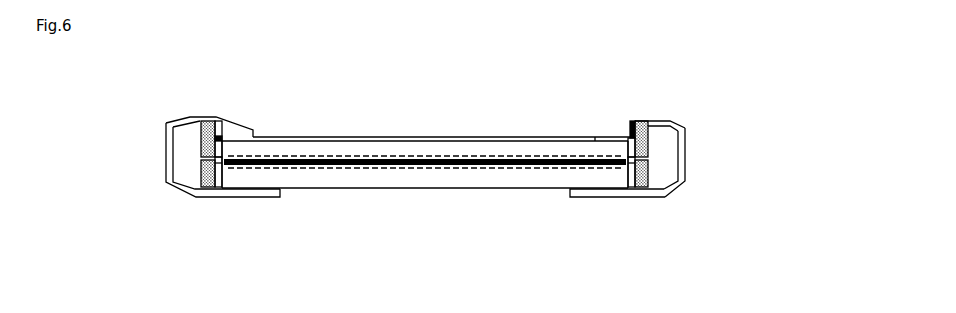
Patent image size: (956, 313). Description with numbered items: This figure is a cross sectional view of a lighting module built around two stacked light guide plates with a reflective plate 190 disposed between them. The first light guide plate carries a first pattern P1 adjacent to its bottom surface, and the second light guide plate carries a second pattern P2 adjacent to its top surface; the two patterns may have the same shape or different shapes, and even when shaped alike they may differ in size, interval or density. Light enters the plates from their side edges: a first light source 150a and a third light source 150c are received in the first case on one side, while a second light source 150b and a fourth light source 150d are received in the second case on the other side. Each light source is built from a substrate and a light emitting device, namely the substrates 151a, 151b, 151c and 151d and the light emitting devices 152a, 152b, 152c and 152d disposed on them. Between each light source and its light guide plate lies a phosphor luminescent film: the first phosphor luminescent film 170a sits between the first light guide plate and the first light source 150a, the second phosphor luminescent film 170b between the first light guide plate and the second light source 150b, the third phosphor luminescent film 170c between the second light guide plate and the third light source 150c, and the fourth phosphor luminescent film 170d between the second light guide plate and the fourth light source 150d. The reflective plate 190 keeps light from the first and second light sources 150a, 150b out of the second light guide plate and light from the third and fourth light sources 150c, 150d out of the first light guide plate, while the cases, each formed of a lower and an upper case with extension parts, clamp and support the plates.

The reflective plate 190 is at (425, 170).
The first pattern P1 is at (530, 157).
The second pattern P2 is at (497, 169).
The first phosphor luminescent film 170a is at (625, 137).
The second phosphor luminescent film 170b is at (222, 139).
The third phosphor luminescent film 170c is at (608, 196).
The fourth phosphor luminescent film 170d is at (233, 189).
The first light source 150a is at (645, 103).
The second light source 150b is at (204, 103).
The third light source 150c is at (627, 216).
The fourth light source 150d is at (223, 216).
The substrate 151a is at (646, 122).
The substrate 151b is at (205, 121).
The substrate 151c is at (641, 188).
The substrate 151d is at (207, 189).
The light emitting device 152a is at (629, 121).
The light emitting device 152b is at (219, 121).
The light emitting device 152c is at (629, 188).
The light emitting device 152d is at (218, 189).